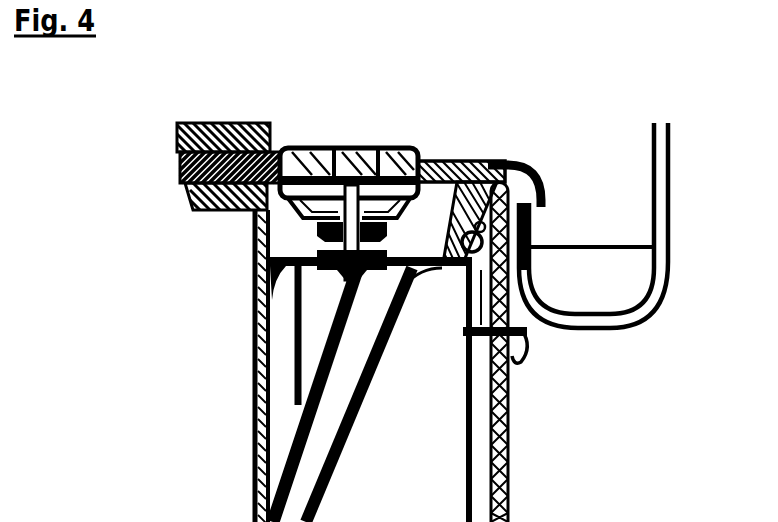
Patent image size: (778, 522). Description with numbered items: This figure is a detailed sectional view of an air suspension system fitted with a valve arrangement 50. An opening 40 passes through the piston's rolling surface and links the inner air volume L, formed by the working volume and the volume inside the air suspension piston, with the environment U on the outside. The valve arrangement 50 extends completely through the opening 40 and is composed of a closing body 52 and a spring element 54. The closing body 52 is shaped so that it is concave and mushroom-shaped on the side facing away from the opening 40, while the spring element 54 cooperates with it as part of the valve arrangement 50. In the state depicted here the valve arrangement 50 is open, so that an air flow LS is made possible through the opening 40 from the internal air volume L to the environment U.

The opening 40 is at (545, 200).
The valve arrangement 50 is at (568, 347).
The closing body 52 is at (540, 355).
The spring element 54 is at (470, 310).
The inner air volume L is at (475, 80).
The environment U is at (698, 250).
The air flow LS is at (408, 459).